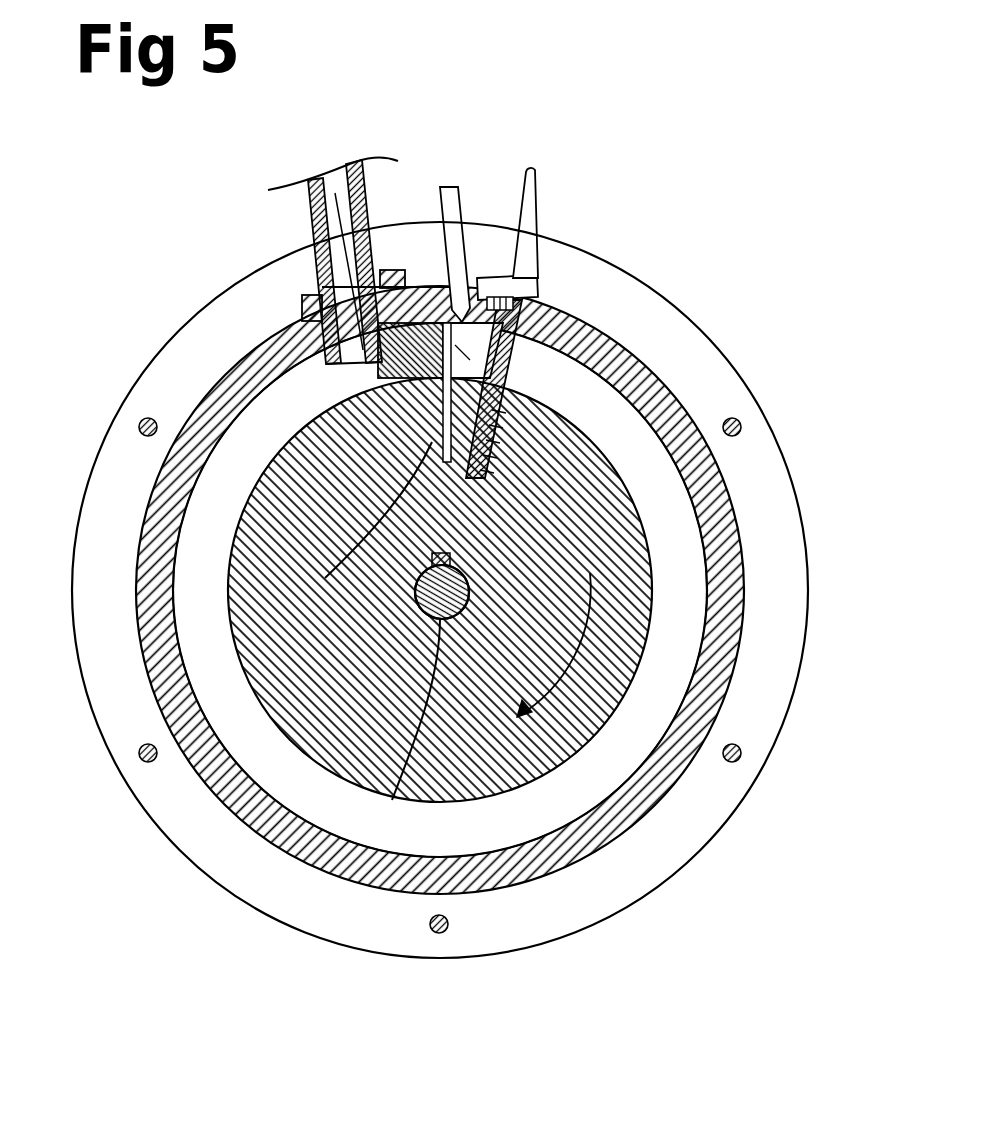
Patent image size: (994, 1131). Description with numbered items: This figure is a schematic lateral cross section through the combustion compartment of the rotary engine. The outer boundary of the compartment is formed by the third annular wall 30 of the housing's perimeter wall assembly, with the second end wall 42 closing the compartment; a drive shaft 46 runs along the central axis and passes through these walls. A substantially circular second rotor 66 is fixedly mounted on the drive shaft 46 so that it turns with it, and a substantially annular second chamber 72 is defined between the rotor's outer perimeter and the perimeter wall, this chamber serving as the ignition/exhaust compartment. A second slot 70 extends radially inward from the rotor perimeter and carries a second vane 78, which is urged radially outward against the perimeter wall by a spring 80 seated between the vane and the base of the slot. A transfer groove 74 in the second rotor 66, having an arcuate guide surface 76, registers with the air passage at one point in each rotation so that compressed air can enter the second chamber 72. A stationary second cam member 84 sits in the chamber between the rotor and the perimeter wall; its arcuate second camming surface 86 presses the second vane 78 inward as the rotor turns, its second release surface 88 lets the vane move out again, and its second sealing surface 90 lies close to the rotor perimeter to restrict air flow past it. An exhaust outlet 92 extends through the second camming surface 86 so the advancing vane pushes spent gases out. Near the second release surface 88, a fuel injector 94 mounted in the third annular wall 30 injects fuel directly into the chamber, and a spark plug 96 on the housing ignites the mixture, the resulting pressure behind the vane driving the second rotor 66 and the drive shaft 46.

The third annular wall 30 is at (563, 872).
The second end wall 42 is at (130, 797).
The drive shaft 46 is at (353, 857).
The second rotor 66 is at (345, 775).
The second slot 70 is at (545, 522).
The second chamber 72 is at (513, 323).
The transfer groove 74 is at (415, 580).
The guide surface 76 is at (417, 565).
The second vane 78 is at (500, 352).
The spring 80 is at (540, 413).
The second cam member 84 is at (305, 325).
The second camming surface 86 is at (307, 373).
The second release surface 88 is at (513, 417).
The second sealing surface 90 is at (390, 365).
The exhaust outlet 92 is at (330, 280).
The fuel injector 94 is at (450, 203).
The spark plug 96 is at (513, 243).